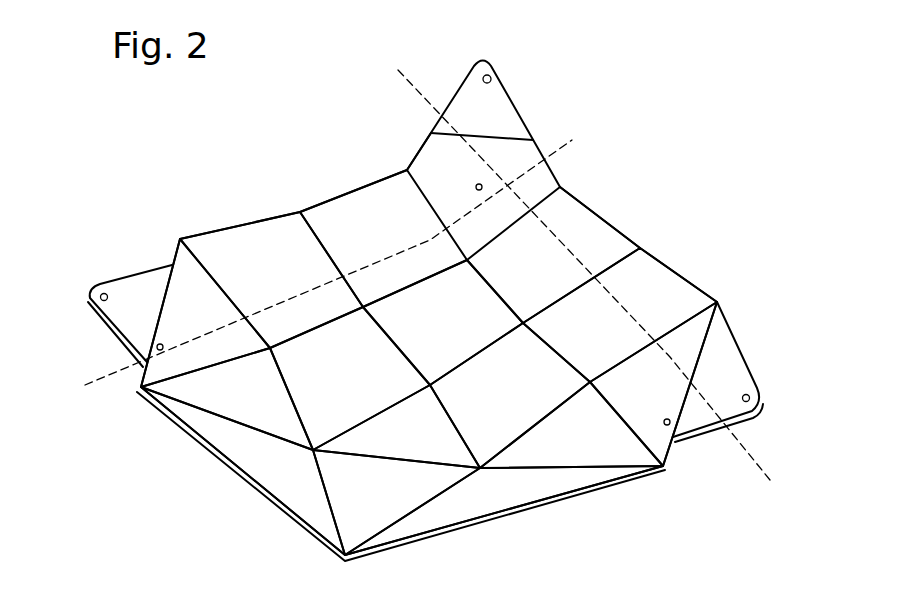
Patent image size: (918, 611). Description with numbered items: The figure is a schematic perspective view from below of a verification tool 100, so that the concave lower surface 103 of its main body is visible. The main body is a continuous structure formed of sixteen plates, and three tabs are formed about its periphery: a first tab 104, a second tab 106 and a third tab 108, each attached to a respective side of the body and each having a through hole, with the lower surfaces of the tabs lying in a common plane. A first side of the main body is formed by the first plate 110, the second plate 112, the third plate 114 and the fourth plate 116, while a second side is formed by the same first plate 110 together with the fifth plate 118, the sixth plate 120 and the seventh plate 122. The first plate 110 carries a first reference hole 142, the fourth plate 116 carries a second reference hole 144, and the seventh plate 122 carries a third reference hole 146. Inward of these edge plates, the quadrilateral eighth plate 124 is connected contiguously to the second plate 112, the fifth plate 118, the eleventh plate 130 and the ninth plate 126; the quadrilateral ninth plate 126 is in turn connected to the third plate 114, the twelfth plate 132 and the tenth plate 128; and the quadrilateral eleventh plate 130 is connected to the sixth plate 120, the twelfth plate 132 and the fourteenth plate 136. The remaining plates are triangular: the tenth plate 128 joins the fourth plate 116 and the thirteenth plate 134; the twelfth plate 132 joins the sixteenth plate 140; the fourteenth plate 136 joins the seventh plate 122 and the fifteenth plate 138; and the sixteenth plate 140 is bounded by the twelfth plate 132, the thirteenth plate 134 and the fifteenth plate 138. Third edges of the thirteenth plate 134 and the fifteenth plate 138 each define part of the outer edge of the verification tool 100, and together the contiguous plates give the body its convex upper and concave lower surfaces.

The verification tool 100 is at (682, 163).
The lower surface 103 is at (217, 225).
The first tab 104 is at (503, 81).
The second tab 106 is at (740, 367).
The third tab 108 is at (96, 285).
The first plate 110 is at (423, 173).
The second plate 112 is at (519, 274).
The third plate 114 is at (577, 341).
The fourth plate 116 is at (629, 399).
The fifth plate 118 is at (353, 229).
The sixth plate 120 is at (249, 277).
The seventh plate 122 is at (171, 323).
The eighth plate 124 is at (422, 334).
The ninth plate 126 is at (489, 397).
The tenth plate 128 is at (565, 447).
The eleventh plate 130 is at (325, 384).
The twelfth plate 132 is at (388, 442).
The thirteenth plate 134 is at (469, 502).
The fourteenth plate 136 is at (226, 402).
The fifteenth plate 138 is at (254, 476).
The sixteenth plate 140 is at (354, 499).
The first reference hole 142 is at (476, 185).
The second reference hole 144 is at (667, 426).
The third reference hole 146 is at (159, 343).